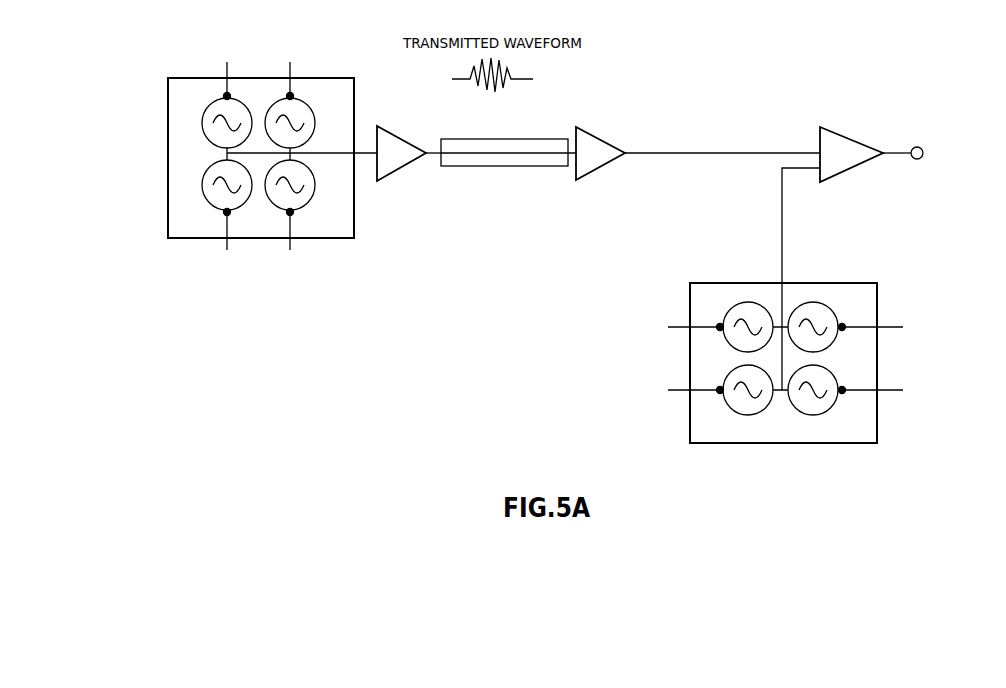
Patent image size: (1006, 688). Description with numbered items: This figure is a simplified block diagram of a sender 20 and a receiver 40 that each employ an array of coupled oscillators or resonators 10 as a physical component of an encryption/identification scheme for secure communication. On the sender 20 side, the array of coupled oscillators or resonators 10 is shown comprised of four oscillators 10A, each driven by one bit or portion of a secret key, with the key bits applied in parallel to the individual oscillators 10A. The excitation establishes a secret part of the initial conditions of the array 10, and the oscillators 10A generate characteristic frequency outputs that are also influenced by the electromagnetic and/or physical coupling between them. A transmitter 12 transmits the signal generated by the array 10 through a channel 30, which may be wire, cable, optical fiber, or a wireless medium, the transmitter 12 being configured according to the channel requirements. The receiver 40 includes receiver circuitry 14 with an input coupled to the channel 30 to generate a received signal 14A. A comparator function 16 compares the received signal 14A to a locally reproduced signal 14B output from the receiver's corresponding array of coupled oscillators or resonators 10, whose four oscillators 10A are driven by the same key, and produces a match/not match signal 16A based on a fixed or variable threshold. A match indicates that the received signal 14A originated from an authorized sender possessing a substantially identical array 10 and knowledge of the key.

The array of coupled oscillators or resonators 10 is at (329, 238).
The oscillator 10A is at (308, 104).
The transmitter 12 is at (386, 131).
The receiver circuitry 14 is at (590, 132).
The received signal 14A is at (770, 153).
The locally reproduced signal 14B is at (782, 240).
The comparator function 16 is at (838, 135).
The match/not match signal 16A is at (897, 153).
The sender 20 is at (363, 305).
The channel 30 is at (491, 139).
The receiver 40 is at (848, 62).